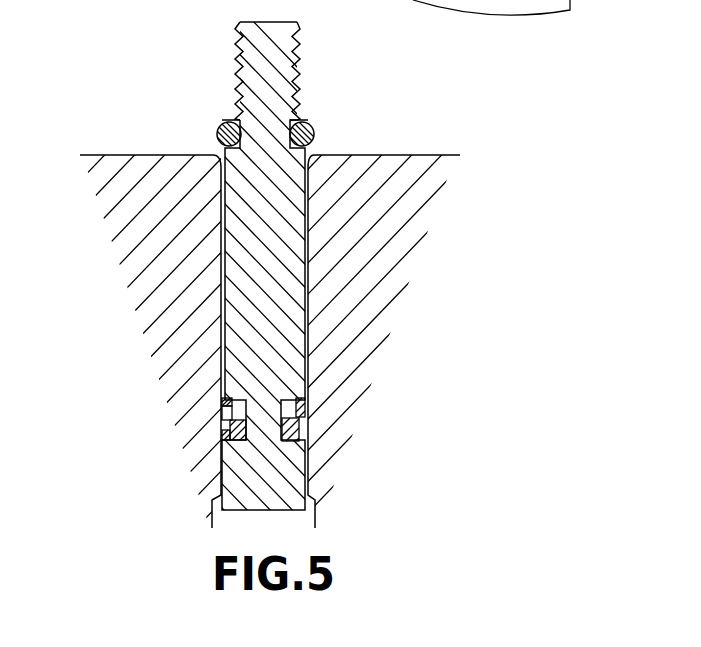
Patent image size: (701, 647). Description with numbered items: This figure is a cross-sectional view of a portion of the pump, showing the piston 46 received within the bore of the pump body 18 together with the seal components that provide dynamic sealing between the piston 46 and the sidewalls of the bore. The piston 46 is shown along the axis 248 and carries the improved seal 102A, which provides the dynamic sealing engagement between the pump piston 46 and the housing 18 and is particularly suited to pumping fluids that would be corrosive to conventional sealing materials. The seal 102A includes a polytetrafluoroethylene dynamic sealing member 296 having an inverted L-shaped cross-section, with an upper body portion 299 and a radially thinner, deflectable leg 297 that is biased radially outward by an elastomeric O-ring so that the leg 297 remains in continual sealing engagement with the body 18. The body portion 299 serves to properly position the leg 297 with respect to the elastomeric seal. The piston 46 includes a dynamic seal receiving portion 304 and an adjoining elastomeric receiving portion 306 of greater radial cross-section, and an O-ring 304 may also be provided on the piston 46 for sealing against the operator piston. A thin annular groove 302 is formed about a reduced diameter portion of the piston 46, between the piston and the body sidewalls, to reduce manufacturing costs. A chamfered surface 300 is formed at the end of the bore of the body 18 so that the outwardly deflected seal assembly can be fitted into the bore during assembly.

The pump body 18 is at (145, 162).
The piston 46 is at (272, 185).
The chamfered surface 300 is at (220, 152).
The dynamic seal receiving portion 304 is at (315, 130).
The annular groove 302 is at (308, 218).
The elastomeric receiving portion 306 is at (226, 432).
The axis 248 is at (222, 438).
The dynamic sealing member 296 is at (306, 405).
The deflectable leg 297 is at (305, 433).
The upper body portion 299 is at (305, 395).
The seal 102A is at (345, 425).